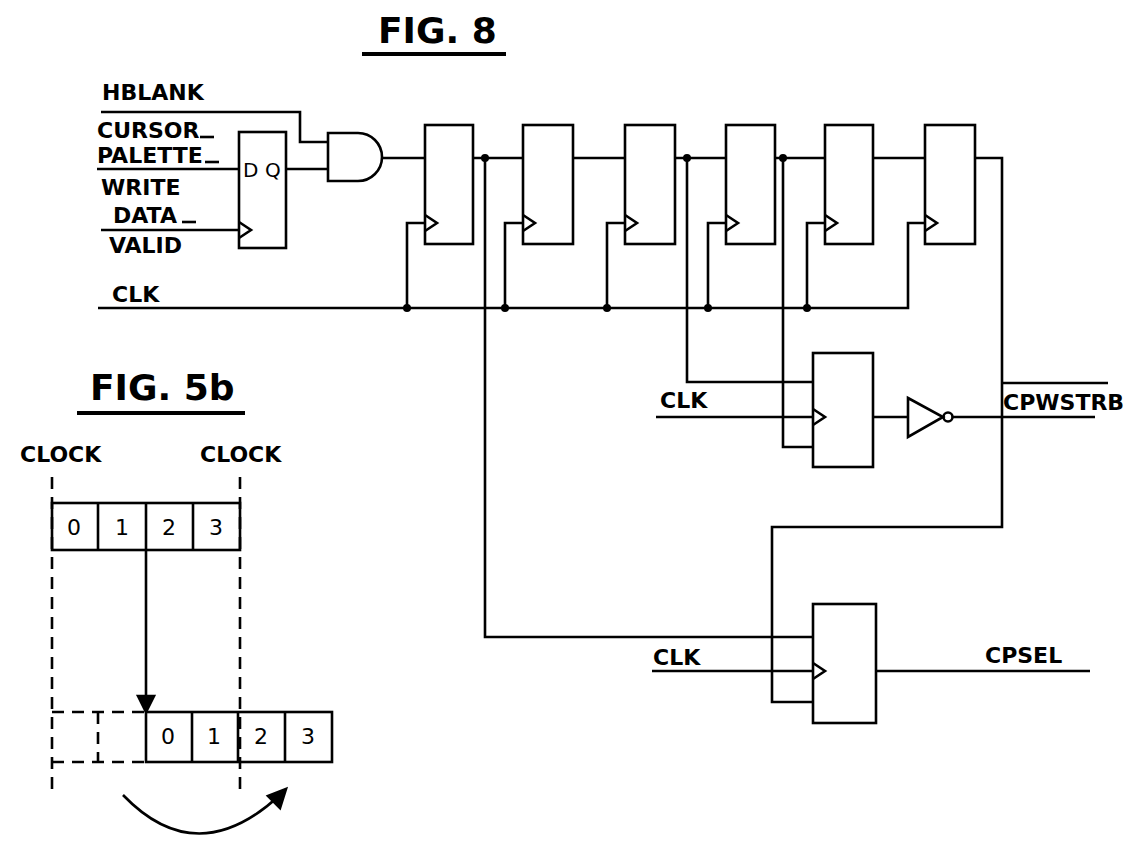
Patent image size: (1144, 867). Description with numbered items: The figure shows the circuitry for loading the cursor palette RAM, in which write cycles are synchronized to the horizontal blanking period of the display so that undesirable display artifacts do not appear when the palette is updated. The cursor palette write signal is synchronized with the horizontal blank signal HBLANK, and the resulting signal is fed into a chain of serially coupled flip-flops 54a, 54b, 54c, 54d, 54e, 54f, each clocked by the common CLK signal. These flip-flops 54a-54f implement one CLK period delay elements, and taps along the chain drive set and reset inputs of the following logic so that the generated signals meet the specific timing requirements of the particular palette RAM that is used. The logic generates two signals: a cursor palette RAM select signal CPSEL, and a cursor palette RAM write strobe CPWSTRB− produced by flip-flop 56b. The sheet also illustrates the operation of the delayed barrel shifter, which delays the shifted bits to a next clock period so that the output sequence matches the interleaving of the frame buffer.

The flip-flop 54a is at (437, 125).
The flip-flop 54b is at (536, 125).
The flip-flop 54c is at (638, 125).
The flip-flop 54d is at (738, 125).
The flip-flop 54e is at (837, 125).
The flip-flop 54f is at (937, 125).
The flip-flop 56b is at (853, 467).